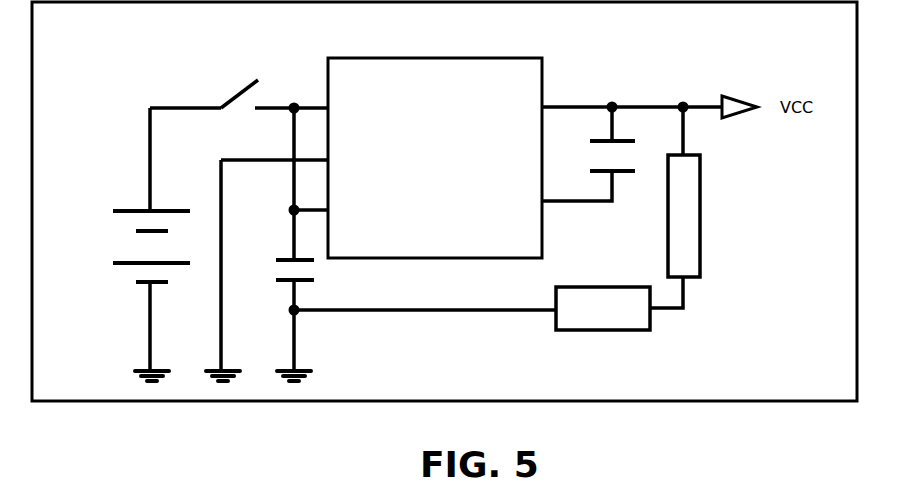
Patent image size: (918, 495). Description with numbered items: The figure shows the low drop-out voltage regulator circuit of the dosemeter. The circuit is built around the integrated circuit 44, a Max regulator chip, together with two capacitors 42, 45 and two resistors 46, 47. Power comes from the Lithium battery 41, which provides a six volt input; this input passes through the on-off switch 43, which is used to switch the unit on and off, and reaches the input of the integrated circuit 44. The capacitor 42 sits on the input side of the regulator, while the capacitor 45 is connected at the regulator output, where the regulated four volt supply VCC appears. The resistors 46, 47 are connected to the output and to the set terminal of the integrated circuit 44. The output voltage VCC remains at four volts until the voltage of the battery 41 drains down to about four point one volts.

The Lithium battery 41 is at (128, 246).
The capacitor 42 is at (280, 254).
The on-off switch 43 is at (216, 82).
The integrated circuit 44 is at (435, 176).
The capacitor 45 is at (612, 116).
The resistor 46 is at (603, 290).
The resistor 47 is at (705, 216).